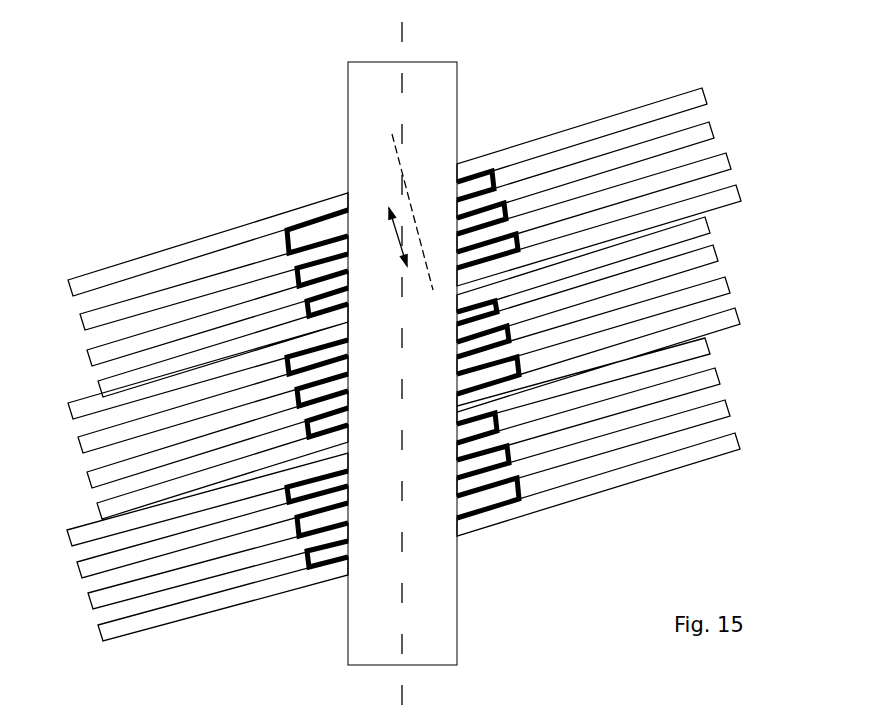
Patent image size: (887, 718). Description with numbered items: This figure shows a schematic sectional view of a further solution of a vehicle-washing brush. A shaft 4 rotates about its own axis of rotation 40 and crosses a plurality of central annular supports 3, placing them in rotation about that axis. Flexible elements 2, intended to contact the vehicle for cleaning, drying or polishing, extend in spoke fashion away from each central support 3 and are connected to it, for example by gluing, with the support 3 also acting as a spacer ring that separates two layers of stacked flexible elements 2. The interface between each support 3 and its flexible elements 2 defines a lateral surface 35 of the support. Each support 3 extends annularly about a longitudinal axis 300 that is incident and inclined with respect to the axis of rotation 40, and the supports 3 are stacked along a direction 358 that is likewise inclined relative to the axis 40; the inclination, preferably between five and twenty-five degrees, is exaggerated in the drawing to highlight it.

The flexible elements 2 is at (720, 190).
The central annular support 3 is at (507, 233).
The shaft 4 is at (372, 93).
The lateral surface 35 is at (298, 307).
The axis of rotation 40 is at (392, 134).
The longitudinal axis 300 is at (387, 162).
The stacking direction 358 is at (390, 232).